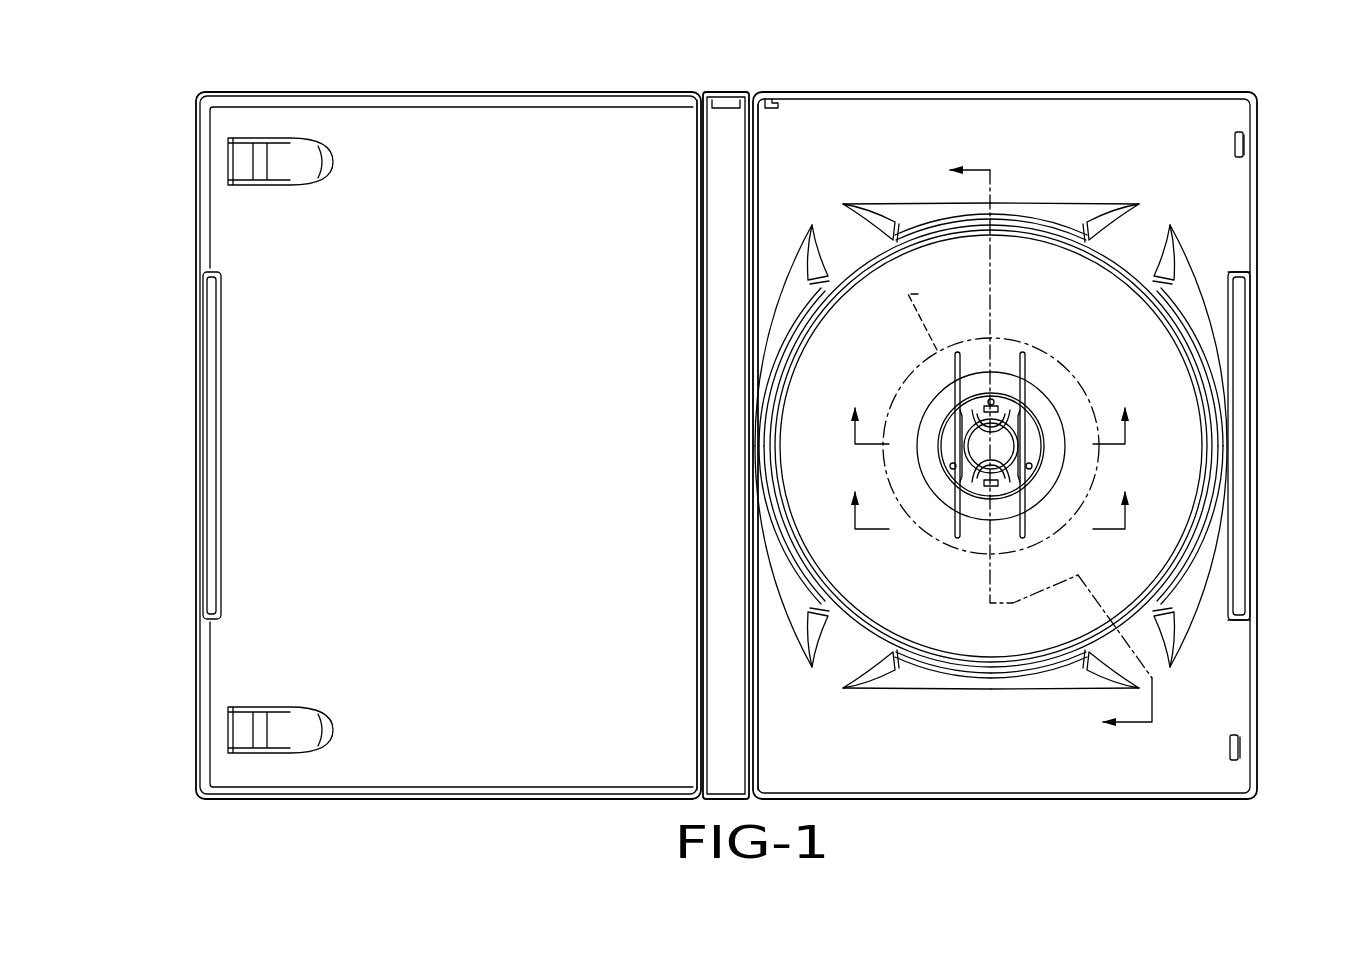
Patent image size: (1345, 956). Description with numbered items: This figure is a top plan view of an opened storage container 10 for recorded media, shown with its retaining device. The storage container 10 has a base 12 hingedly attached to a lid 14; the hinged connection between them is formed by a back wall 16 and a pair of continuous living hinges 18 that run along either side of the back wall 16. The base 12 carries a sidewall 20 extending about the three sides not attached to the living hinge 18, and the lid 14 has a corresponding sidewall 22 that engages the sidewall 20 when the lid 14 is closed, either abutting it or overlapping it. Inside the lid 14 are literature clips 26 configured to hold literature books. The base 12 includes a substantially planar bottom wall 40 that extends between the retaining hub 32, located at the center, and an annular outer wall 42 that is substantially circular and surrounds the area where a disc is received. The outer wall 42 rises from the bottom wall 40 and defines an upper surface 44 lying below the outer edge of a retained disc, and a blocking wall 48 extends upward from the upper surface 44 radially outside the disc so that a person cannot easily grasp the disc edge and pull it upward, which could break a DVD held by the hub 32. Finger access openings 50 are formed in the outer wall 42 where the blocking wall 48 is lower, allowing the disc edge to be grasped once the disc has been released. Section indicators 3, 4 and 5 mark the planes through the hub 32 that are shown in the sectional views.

The storage container 10 is at (250, 815).
The base 12 is at (1049, 140).
The lid 14 is at (428, 138).
The back wall 16 is at (725, 120).
The living hinges 18 is at (697, 185).
The sidewall 20 is at (1143, 90).
The sidewall 22 is at (348, 90).
The literature clips 26 is at (299, 172).
The retaining device or hub 32 is at (1043, 386).
The bottom wall 40 is at (1178, 442).
The outer wall 42 is at (1192, 326).
The upper surface 44 is at (1183, 560).
The blocking wall 48 is at (1207, 520).
The finger access openings 50 is at (850, 233).
The section line 3- 3 is at (990, 411).
The section line 4- 4 is at (990, 494).
The section line 5- 5 is at (1041, 447).